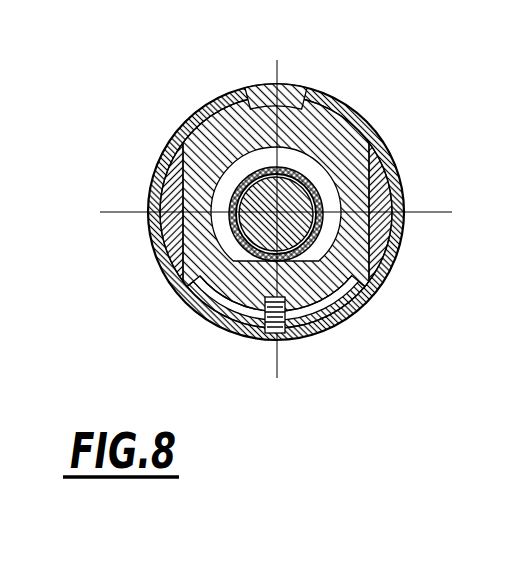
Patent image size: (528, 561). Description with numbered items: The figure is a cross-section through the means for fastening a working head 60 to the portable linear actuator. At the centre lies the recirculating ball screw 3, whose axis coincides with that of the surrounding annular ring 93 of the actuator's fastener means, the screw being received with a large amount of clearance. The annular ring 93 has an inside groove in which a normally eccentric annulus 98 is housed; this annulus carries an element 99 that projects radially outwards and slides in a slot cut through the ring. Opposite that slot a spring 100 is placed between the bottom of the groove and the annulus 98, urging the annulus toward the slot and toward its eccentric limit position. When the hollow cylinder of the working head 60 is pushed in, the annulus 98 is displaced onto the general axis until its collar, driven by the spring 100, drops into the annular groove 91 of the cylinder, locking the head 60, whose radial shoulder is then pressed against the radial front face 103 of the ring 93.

The recirculating ball screw 3 is at (247, 162).
The working head 60 is at (332, 188).
The annular groove 91 is at (212, 232).
The annular ring 93 is at (381, 283).
The eccentric annulus 98 is at (180, 297).
The radially projecting element 99 is at (296, 84).
The spring 100 is at (272, 340).
The radial front face 103 is at (302, 282).